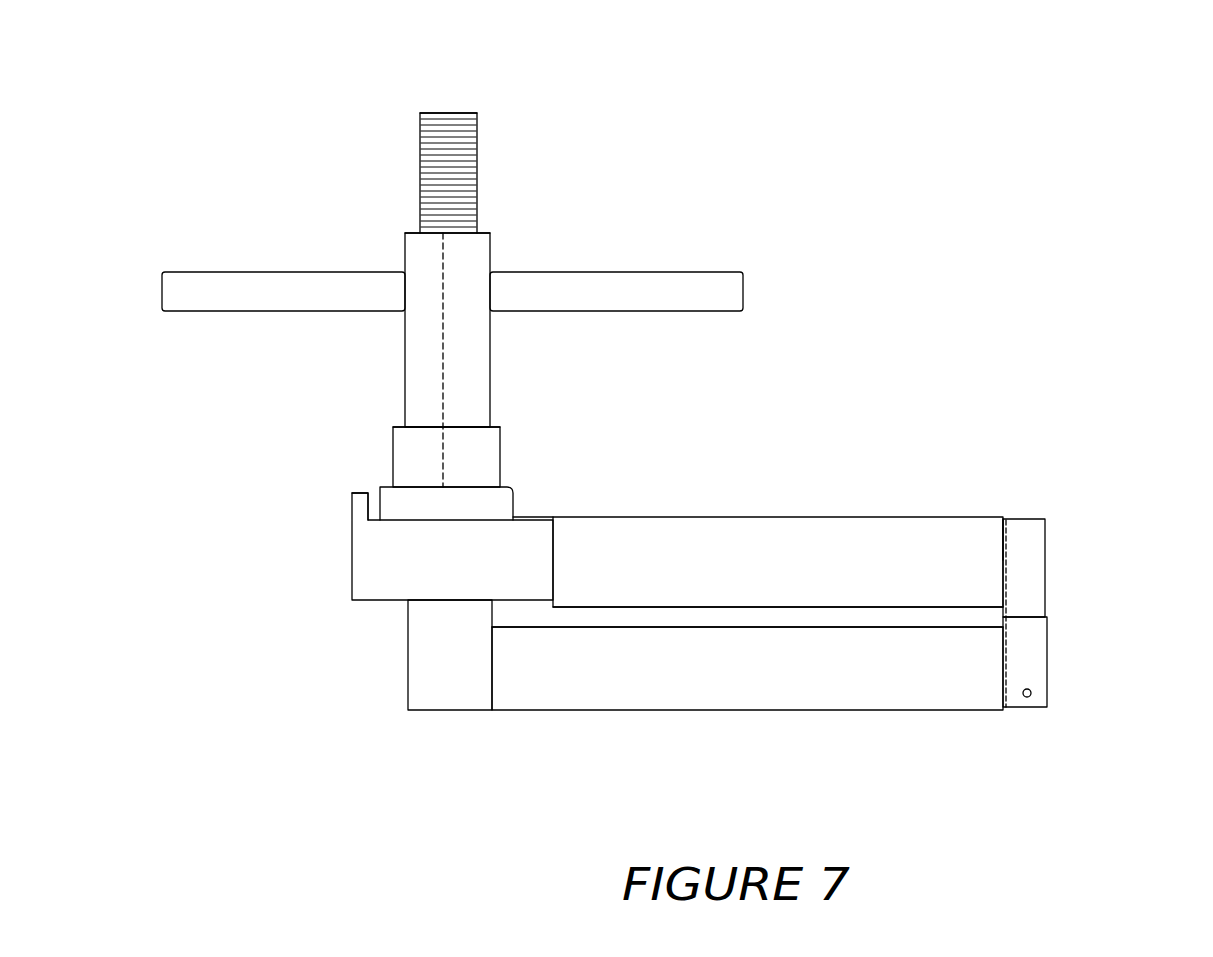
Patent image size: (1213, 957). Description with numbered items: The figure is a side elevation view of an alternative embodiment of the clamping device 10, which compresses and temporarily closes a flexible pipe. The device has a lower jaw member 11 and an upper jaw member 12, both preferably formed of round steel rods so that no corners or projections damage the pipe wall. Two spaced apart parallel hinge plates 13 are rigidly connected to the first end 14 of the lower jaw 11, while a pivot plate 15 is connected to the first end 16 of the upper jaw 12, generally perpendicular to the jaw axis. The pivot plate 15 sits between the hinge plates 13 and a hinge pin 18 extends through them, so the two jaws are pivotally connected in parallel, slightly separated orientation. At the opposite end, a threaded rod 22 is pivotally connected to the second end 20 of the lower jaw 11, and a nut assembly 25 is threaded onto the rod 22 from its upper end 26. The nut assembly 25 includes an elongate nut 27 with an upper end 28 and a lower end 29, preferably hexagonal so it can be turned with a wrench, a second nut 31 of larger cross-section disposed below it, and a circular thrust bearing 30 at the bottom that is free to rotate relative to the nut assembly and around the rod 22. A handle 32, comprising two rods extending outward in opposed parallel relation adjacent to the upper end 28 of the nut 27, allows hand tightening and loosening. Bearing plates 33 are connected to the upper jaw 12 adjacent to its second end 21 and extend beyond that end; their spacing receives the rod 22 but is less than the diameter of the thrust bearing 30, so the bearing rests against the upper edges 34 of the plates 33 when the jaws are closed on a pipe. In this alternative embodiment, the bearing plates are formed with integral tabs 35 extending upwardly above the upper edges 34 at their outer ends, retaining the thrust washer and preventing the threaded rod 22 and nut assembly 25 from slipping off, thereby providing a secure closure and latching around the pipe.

The clamping device 10 is at (884, 331).
The lower jaw member 11 is at (760, 690).
The upper jaw member 12 is at (872, 547).
The hinge plates 13 is at (1040, 647).
The first end of lower jaw 14 is at (1007, 682).
The pivot plate 15 is at (1033, 562).
The first end of upper jaw 16 is at (1000, 543).
The hinge pin 18 is at (1030, 696).
The second end of lower jaw 20 is at (493, 695).
The second end of upper jaw 21 is at (560, 608).
The threaded rod 22 is at (470, 157).
The nut assembly 25 is at (392, 368).
The upper end of threaded rod 26 is at (450, 113).
The elongate nut 27 is at (482, 342).
The upper end of elongate nut 28 is at (413, 233).
The lower end of elongate nut 29 is at (498, 422).
The thrust bearing 30 is at (392, 497).
The second nut 31 is at (490, 458).
The handle 32 is at (287, 277).
The bearing plates 33 is at (380, 583).
The upper edges of bearing plates 34 is at (530, 517).
The integral tabs 35 is at (360, 503).